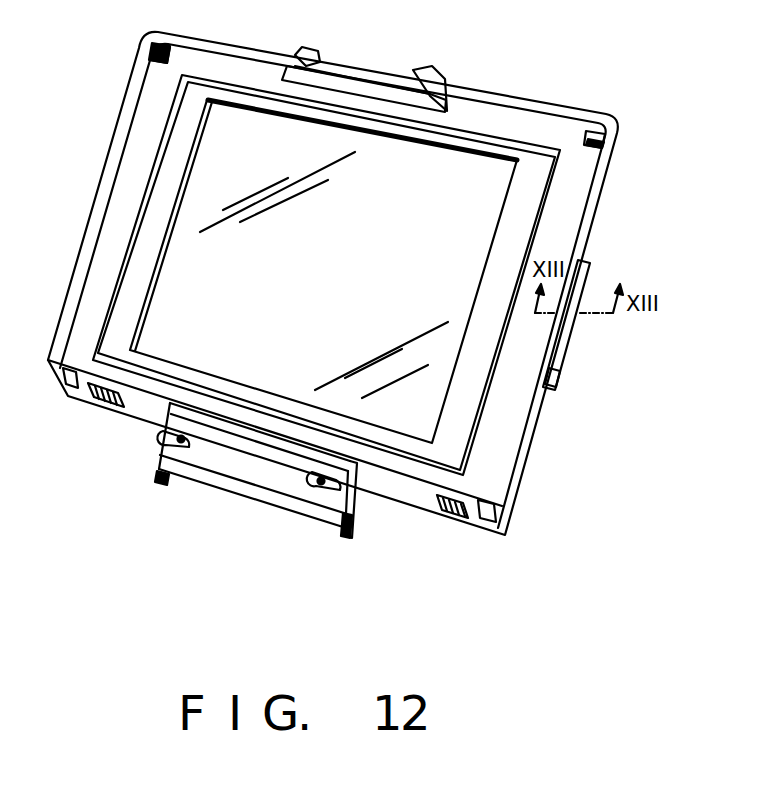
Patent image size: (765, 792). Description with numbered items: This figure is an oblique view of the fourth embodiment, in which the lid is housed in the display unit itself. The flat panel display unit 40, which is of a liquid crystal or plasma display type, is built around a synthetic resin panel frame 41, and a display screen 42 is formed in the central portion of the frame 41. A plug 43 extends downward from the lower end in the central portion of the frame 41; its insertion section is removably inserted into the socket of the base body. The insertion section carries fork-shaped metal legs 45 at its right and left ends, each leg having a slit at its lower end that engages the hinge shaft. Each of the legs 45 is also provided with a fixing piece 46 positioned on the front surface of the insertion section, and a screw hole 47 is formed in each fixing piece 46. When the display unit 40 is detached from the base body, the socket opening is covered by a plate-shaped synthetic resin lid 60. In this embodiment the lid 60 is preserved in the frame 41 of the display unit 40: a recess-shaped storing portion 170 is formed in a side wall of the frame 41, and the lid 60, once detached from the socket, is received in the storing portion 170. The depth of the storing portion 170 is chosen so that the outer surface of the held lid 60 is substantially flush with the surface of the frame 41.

The flat panel display unit 40 is at (614, 242).
The panel frame 41 is at (503, 437).
The display screen 42 is at (170, 279).
The plug 43 is at (247, 465).
The fork-shaped metal legs 45 is at (161, 483).
The fixing piece 46 is at (162, 441).
The screw hole 47 is at (163, 450).
The lid 60 is at (562, 352).
The storing portion 170 is at (560, 388).